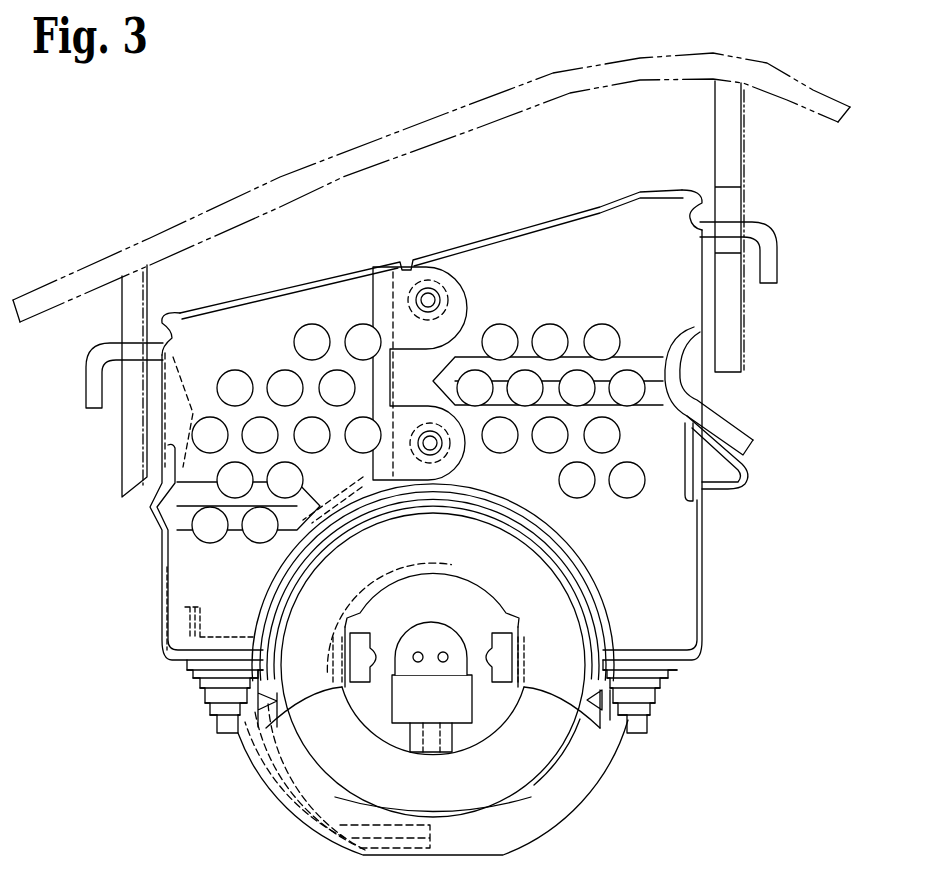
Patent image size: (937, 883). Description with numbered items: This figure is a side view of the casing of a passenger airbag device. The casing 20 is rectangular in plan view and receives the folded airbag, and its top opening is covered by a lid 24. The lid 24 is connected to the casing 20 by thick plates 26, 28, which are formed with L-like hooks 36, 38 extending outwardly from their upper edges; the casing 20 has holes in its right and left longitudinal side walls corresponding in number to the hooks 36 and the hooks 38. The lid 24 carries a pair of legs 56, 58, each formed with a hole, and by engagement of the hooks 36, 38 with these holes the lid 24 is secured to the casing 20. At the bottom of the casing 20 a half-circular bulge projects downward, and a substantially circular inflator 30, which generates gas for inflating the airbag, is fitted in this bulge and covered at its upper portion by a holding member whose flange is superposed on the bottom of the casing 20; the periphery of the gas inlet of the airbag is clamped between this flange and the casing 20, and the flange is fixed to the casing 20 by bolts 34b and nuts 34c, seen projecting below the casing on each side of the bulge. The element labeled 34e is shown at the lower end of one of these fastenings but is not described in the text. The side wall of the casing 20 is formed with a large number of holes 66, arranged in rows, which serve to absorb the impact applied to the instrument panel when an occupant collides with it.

The casing 20 is at (688, 549).
The lid 24 is at (317, 152).
The thick plate 26 is at (740, 418).
The thick plate 28 is at (75, 410).
The inflator 30 is at (490, 717).
The bolt 34b is at (653, 712).
The nut 34c is at (200, 692).
The boss end 34e is at (213, 712).
The hook 36 is at (772, 258).
The hook 38 is at (88, 352).
The leg 56 is at (745, 128).
The leg 58 is at (147, 283).
The holes 66 is at (600, 328).